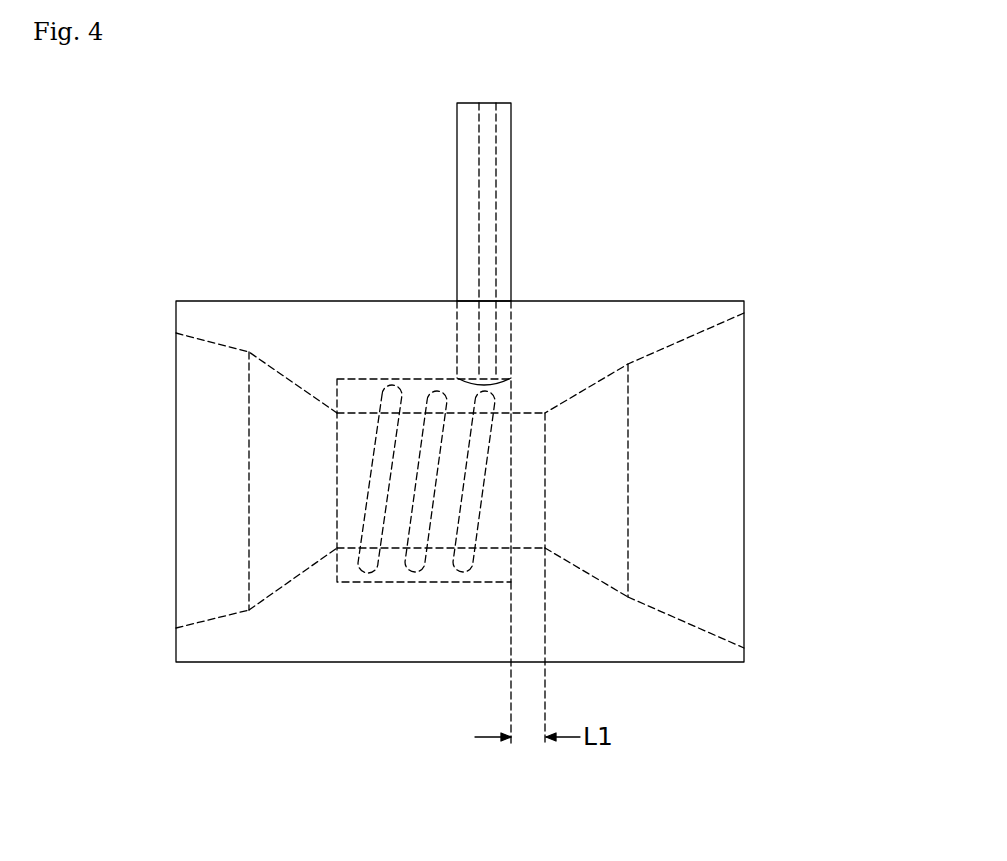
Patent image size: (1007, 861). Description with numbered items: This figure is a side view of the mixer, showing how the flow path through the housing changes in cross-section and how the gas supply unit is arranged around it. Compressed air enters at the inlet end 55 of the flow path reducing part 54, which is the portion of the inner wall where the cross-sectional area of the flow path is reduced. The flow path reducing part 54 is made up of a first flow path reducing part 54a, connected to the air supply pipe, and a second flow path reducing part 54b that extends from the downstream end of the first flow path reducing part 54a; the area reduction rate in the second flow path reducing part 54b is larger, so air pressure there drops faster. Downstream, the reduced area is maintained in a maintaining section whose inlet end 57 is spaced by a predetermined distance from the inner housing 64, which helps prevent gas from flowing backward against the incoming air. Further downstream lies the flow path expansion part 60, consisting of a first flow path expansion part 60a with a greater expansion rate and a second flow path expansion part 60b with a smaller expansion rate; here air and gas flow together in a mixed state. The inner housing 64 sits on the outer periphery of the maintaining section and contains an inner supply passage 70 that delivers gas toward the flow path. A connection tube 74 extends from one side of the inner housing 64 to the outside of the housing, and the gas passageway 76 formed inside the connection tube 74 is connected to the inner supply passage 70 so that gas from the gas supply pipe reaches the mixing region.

The inlet end of the flow path reducing part 55 is at (744, 648).
The flow path reducing part 54 is at (744, 506).
The first flow path reducing part 54a is at (680, 620).
The second flow path reducing part 54b is at (592, 576).
The inlet end of the flow path maintaining part 57 is at (545, 412).
The flow path expansion part 60 is at (256, 592).
The first flow path expansion part 60a is at (272, 597).
The second flow path expansion part 60b is at (205, 623).
The inner housing 64 is at (382, 585).
The inner supply passage 70 is at (425, 566).
The connection tube 74 is at (511, 200).
The gas passageway 76 is at (486, 162).